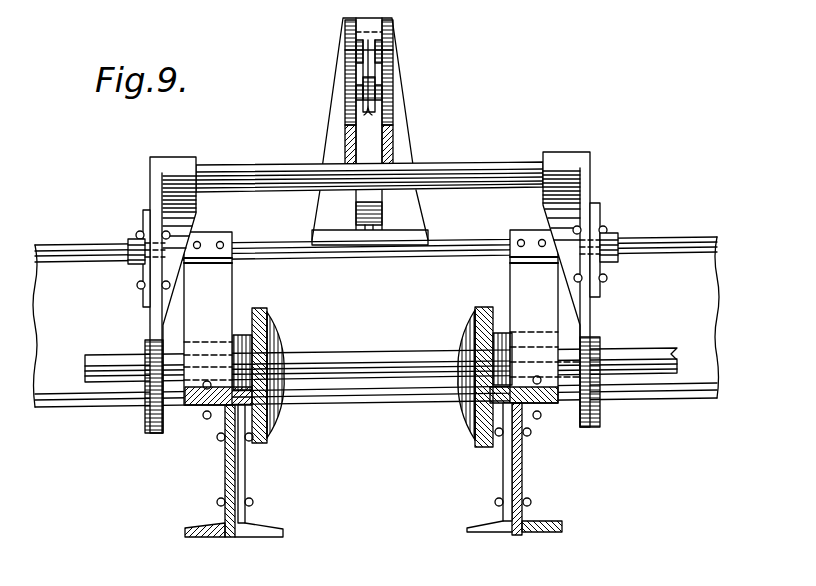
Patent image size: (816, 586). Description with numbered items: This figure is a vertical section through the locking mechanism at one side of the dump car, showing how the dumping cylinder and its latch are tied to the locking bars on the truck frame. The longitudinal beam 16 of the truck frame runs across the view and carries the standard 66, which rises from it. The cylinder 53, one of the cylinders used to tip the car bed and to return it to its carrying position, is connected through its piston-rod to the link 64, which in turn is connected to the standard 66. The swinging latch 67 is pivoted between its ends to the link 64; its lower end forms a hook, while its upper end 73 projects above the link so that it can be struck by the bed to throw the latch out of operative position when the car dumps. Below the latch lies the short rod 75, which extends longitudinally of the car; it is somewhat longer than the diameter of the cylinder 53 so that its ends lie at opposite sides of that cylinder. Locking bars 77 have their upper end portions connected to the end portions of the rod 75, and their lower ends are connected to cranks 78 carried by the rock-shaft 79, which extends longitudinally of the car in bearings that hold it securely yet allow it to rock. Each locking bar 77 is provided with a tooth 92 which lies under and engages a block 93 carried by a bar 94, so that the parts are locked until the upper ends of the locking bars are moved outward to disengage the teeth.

The longitudinal beam 16 is at (708, 296).
The cylinder 53 is at (268, 340).
The link 64 is at (347, 143).
The standard 66 is at (413, 222).
The swinging latch 67 is at (368, 138).
The upper end of latch 73 is at (370, 88).
The short rod 75 is at (478, 142).
The locking bar 77 is at (150, 320).
The crank 78 is at (148, 416).
The rock-shaft 79 is at (352, 340).
The tooth 92 is at (148, 218).
The block 93 is at (135, 265).
The bar 94 is at (236, 282).